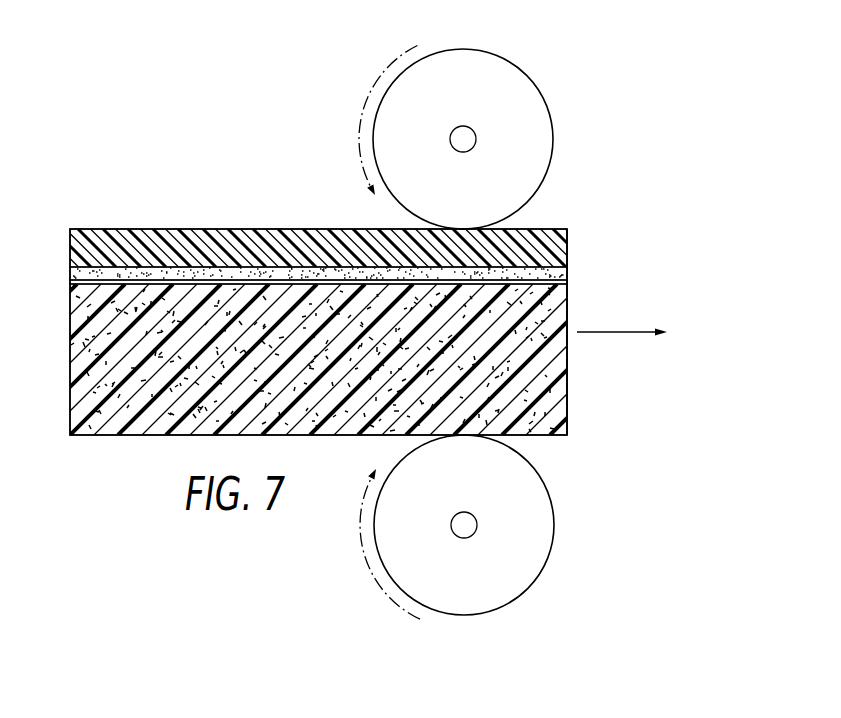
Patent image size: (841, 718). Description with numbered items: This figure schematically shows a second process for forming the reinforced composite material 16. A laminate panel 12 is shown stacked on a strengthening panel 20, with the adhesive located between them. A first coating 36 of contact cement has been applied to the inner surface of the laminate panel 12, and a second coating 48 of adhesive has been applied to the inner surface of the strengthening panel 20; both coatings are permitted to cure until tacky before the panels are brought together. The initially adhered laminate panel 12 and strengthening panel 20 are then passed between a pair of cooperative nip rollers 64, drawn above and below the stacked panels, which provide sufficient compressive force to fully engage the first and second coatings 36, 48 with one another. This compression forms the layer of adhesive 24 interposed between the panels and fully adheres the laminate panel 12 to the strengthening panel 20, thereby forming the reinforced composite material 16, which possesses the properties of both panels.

The reinforced composite material 16 is at (588, 222).
The laminate panel 12 is at (70, 243).
The first coating 36 is at (70, 273).
The second coating 48 is at (70, 282).
The strengthening panel 20 is at (70, 353).
The layer of adhesive 24 is at (567, 280).
The nip rollers 64 is at (541, 94).